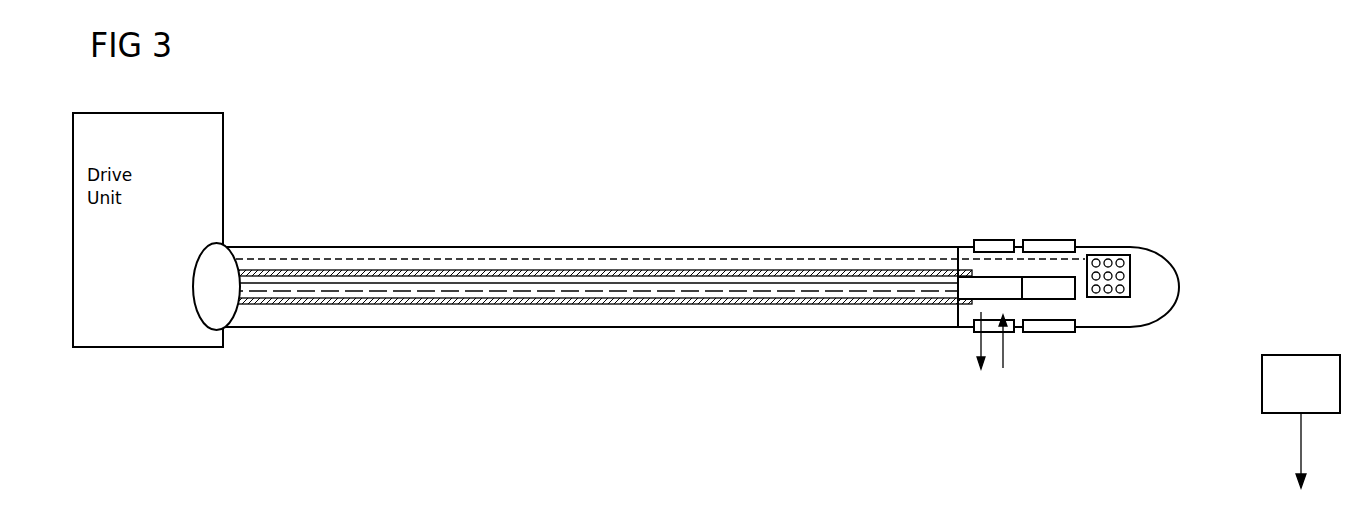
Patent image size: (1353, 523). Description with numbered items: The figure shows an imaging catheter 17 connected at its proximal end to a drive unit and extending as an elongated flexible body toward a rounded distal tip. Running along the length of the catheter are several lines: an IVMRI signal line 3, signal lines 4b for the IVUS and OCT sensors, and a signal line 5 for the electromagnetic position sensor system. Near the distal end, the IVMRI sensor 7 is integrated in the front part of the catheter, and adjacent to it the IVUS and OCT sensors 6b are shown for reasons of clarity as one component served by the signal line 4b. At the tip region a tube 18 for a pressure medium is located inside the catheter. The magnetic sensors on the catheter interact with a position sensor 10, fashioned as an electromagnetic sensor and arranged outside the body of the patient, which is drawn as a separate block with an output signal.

The imaging catheter 17 is at (462, 203).
The signal line 5 is at (740, 257).
The signal lines 4b is at (680, 276).
The IVMRI signal line 3 is at (573, 292).
The IVMRI sensor 7 is at (992, 281).
The IVUS and OCT sensors 6b is at (1050, 281).
The tube 18 is at (1112, 257).
The position sensor 10 is at (1268, 384).